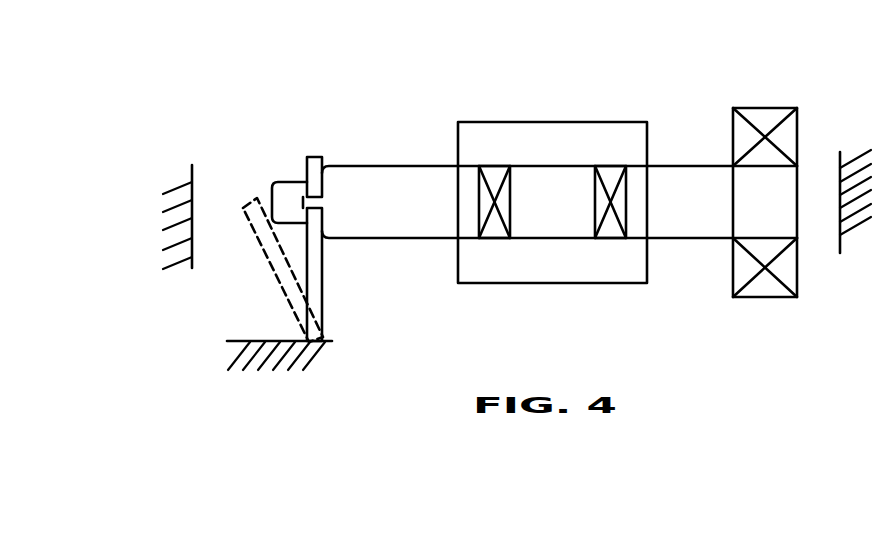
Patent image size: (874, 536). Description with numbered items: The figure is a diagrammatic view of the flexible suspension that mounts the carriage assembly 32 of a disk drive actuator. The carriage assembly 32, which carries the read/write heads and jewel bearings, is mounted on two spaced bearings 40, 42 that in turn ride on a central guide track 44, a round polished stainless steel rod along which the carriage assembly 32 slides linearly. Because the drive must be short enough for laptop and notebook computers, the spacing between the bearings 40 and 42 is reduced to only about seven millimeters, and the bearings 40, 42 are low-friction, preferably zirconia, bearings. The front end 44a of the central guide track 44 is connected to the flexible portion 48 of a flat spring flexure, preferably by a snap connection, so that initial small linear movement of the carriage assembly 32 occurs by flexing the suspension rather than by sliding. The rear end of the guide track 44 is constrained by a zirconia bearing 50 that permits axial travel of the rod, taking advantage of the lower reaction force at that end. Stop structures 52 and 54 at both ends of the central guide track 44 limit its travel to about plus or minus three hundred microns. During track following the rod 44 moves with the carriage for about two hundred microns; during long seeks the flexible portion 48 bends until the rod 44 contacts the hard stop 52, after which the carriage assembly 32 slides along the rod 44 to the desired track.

The carriage assembly 32 is at (492, 130).
The bearing 40 is at (610, 232).
The bearing 42 is at (493, 232).
The central guide track 44 is at (682, 222).
The front end of the central guide track 44a is at (287, 193).
The flexible portion 48 is at (312, 157).
The zirconia bearing 50 is at (763, 120).
The stop structure 52 is at (188, 215).
The stop structure 54 is at (847, 205).